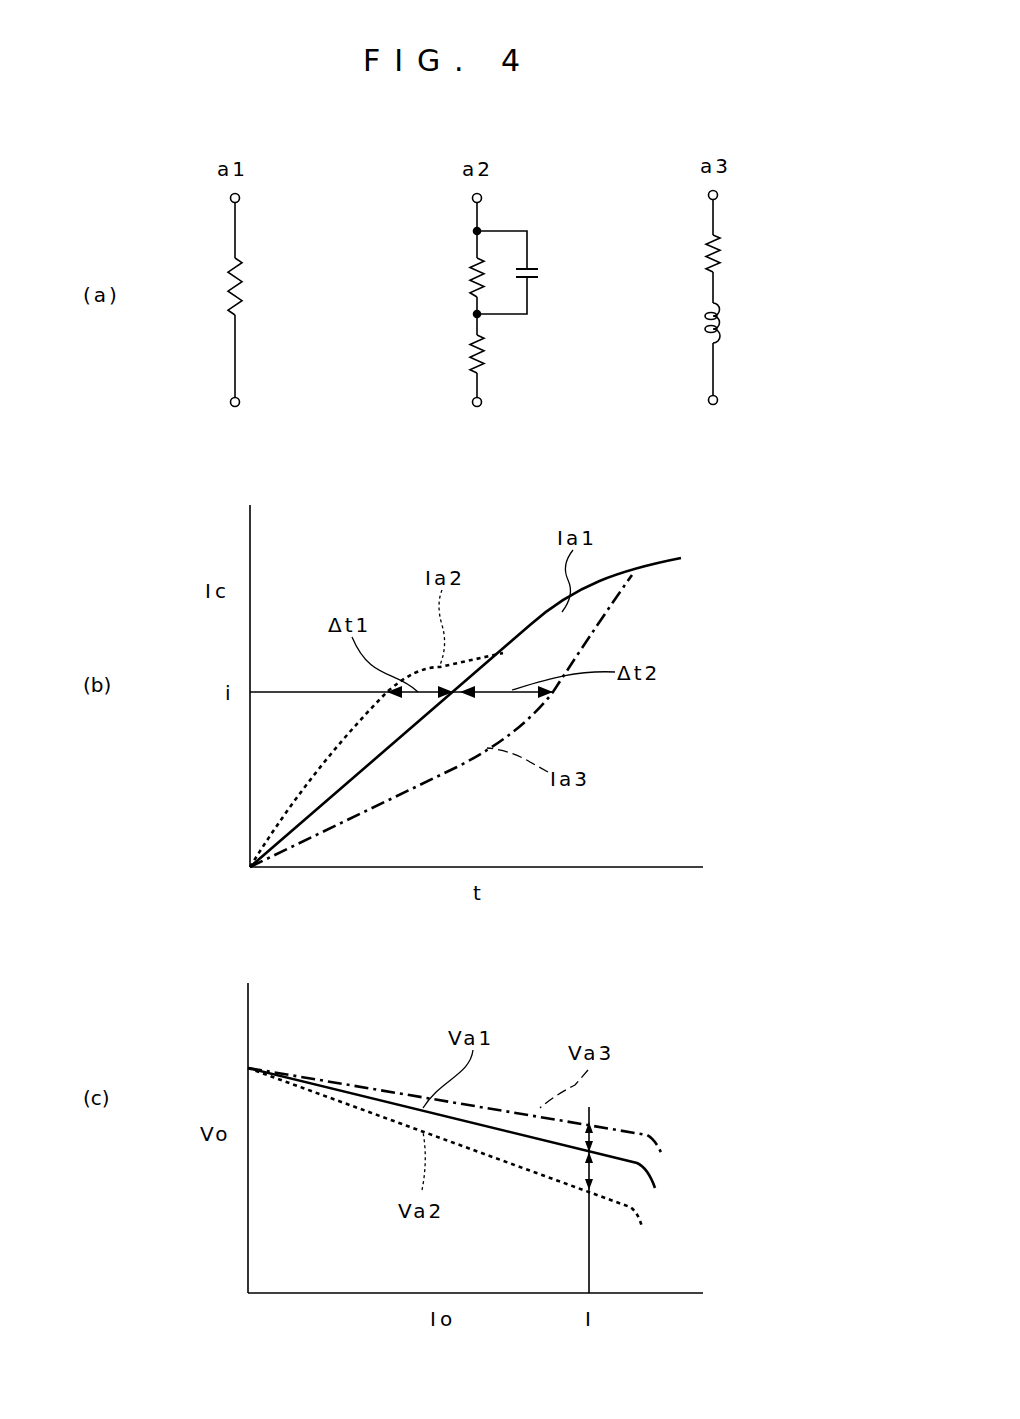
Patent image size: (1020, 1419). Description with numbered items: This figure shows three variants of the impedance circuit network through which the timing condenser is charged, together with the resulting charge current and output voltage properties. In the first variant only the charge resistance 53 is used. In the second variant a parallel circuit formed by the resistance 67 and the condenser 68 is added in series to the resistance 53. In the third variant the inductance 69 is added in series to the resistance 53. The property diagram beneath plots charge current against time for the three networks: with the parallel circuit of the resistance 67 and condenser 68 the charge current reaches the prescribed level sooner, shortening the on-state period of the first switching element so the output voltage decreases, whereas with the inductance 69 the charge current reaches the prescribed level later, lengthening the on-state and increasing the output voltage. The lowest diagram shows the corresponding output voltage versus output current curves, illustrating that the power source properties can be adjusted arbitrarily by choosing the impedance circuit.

The charge resistance 53 is at (243, 283).
The resistance 67 is at (470, 277).
The condenser 68 is at (540, 271).
The inductance 69 is at (722, 323).